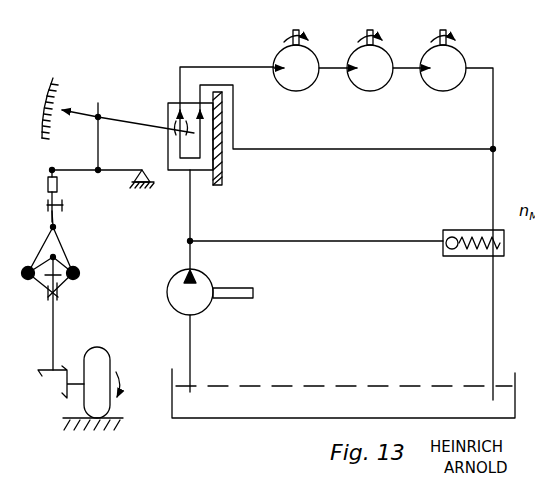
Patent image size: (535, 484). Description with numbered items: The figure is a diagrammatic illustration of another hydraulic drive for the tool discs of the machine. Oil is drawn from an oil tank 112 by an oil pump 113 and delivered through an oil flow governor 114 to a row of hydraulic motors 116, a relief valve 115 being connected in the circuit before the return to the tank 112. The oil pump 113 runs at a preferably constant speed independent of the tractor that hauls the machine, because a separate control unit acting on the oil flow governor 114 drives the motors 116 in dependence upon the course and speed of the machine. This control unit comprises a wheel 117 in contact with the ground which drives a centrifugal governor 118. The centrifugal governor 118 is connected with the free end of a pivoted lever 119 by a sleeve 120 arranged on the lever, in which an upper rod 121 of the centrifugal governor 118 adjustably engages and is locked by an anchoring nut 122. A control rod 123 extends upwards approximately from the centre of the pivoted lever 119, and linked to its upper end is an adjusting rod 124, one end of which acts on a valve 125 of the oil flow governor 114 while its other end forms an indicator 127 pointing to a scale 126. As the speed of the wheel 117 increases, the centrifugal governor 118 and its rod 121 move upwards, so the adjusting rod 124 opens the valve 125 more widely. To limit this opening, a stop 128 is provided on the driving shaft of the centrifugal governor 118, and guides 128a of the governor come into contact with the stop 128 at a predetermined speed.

The oil tank 112 is at (343, 409).
The oil pump 113 is at (214, 327).
The oil flow governor 114 is at (330, 156).
The relief valve 115 is at (346, 258).
The hydraulic motors 116 is at (384, 215).
The wheel 117 is at (80, 379).
The centrifugal governor 118 is at (72, 262).
The pivoted lever 119 is at (96, 159).
The sleeve 120 is at (84, 183).
The upper rod 121 is at (86, 229).
The anchoring nut 122 is at (84, 207).
The control rod 123 is at (117, 136).
The adjusting rod 124 is at (145, 88).
The valve 125 is at (153, 162).
The scale 126 is at (40, 91).
The indicator 127 is at (82, 80).
The stop 128 is at (84, 313).
The guides 128a is at (87, 286).